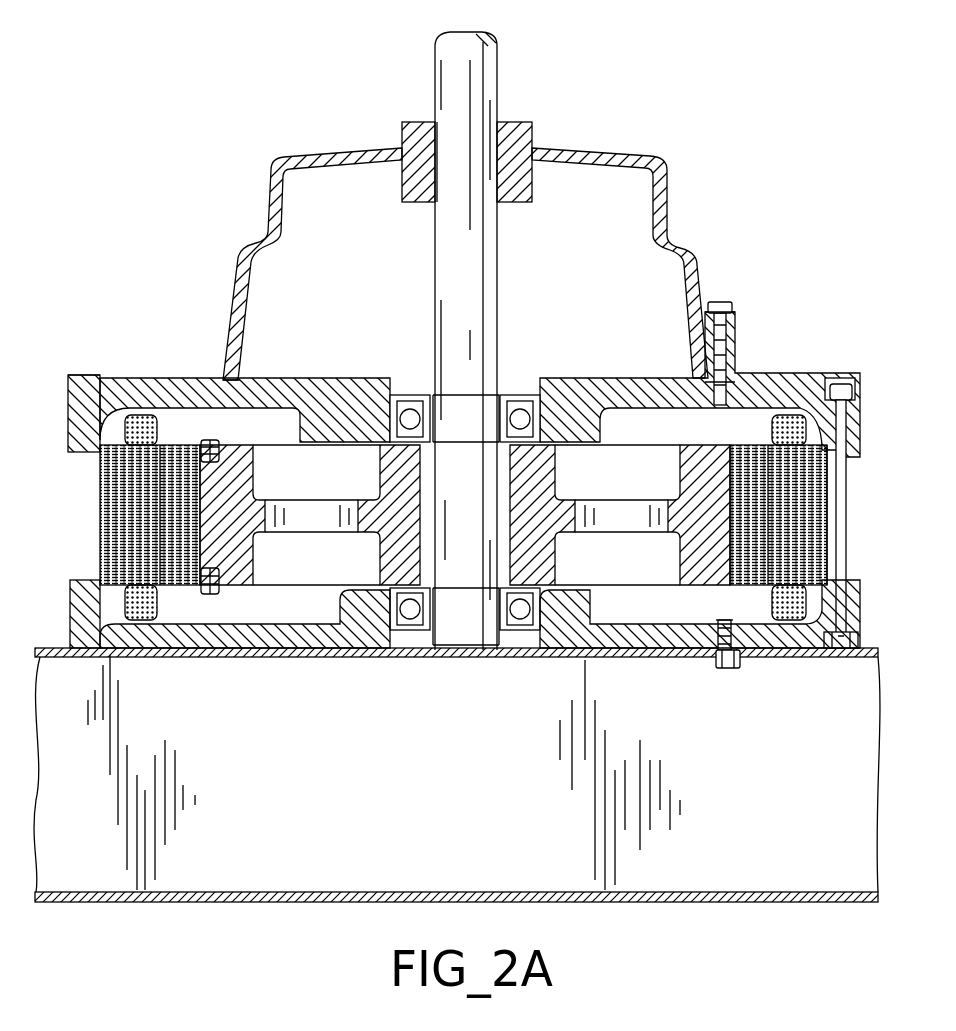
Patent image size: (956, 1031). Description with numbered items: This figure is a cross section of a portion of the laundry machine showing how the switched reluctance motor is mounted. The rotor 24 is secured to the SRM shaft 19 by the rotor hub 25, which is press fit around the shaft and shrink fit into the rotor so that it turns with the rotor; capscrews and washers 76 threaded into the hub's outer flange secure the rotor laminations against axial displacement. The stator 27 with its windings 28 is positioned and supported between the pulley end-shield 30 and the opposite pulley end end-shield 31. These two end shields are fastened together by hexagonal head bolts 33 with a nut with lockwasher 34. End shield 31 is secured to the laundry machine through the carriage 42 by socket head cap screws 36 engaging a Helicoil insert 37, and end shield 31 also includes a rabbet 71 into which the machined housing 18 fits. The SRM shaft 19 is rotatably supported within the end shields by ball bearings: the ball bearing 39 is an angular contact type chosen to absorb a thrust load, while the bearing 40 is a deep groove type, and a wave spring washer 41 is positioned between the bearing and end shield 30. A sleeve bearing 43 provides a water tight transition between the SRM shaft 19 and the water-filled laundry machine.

The machined housing 18 is at (628, 160).
The SRM shaft 19 is at (492, 80).
The rotor 24 is at (748, 448).
The rotor hub 25 is at (378, 500).
The stator 27 is at (830, 572).
The windings 28 is at (795, 620).
The pulley end-shield 30 is at (652, 635).
The opposite pulley end end-shield 31 is at (652, 380).
The hexagonal head bolts 33 is at (848, 650).
The nut with lockwasher 34 is at (841, 384).
The socket head cap screws 36 is at (718, 300).
The Helicoil insert 37 is at (735, 380).
The ball bearing 39 is at (514, 650).
The bearing 40 is at (415, 398).
The wave spring washer 41 is at (520, 398).
The carriage 42 is at (249, 868).
The sleeve bearing 43 is at (440, 165).
The rabbet 71 is at (235, 380).
The capscrews and washers 76 is at (208, 438).